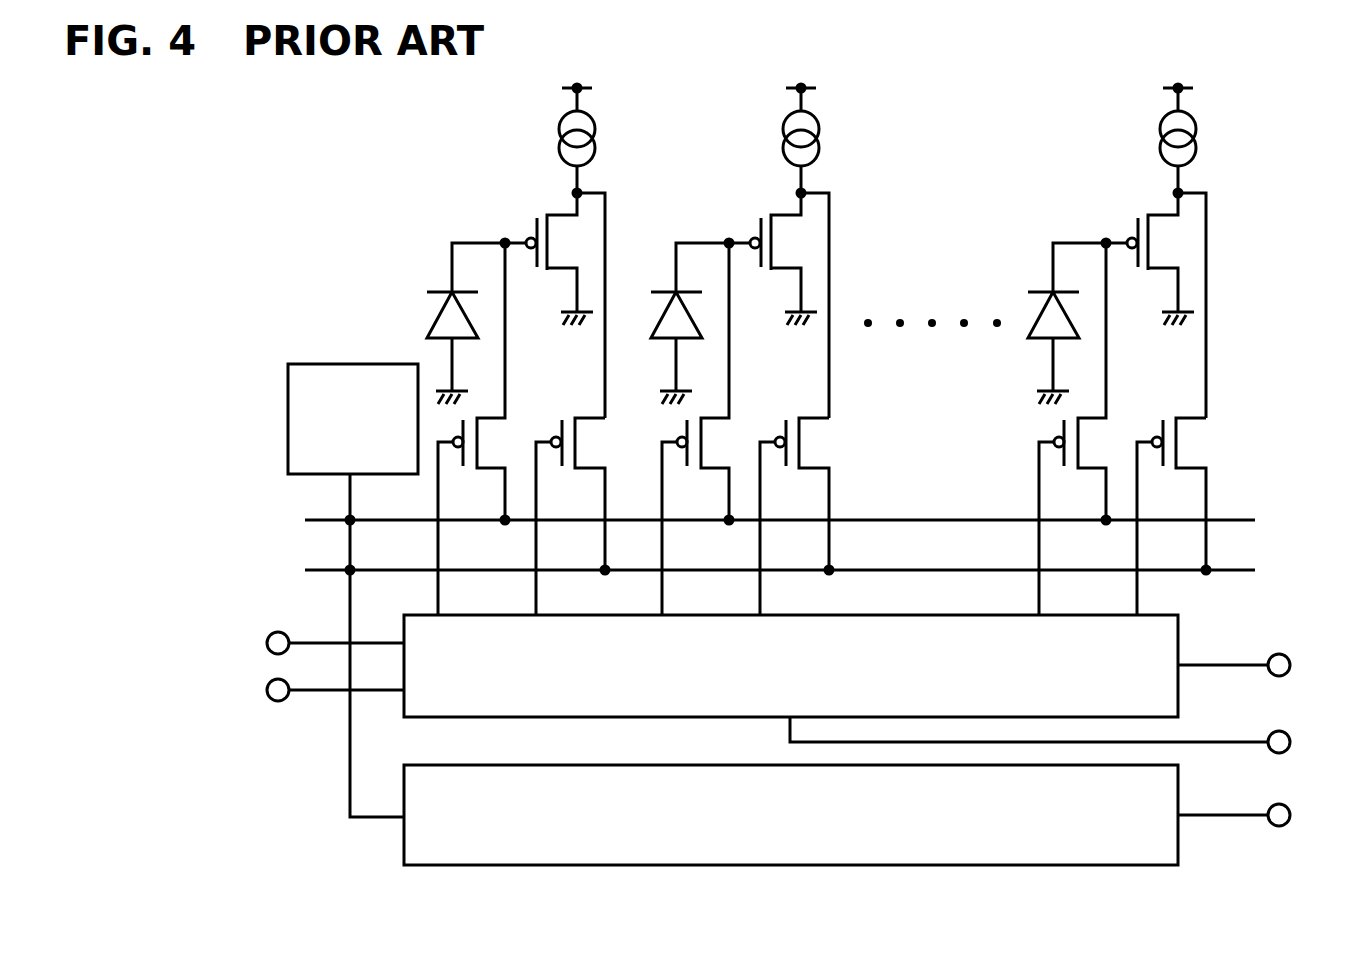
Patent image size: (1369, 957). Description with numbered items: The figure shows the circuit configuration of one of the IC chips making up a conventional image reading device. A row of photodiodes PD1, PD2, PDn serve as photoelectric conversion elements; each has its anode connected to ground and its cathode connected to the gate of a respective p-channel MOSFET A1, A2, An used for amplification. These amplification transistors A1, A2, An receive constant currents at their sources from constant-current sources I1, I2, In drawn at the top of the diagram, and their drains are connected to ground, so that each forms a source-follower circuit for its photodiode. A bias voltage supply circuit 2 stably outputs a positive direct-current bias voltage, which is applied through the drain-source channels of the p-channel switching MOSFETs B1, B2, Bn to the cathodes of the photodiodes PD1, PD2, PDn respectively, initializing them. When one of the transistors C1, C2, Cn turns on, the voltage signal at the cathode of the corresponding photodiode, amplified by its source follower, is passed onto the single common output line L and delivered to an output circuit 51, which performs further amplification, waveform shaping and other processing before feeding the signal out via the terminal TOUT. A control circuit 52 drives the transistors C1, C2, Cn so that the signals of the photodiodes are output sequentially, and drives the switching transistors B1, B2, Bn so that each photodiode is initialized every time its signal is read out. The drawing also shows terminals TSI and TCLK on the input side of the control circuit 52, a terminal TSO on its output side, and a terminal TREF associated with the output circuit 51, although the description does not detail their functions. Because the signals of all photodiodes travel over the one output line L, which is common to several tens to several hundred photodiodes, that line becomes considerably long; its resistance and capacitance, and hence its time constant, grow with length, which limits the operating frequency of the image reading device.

The bias voltage supply circuit 2 is at (333, 363).
The output circuit 51 is at (1168, 846).
The control circuit 52 is at (1168, 645).
The output line L is at (1246, 569).
The constant-current source I1 is at (599, 131).
The constant-current source I2 is at (823, 131).
The constant-current source In is at (1200, 131).
The p-channel MOSFET for amplification A1 is at (560, 244).
The p-channel MOSFET for amplification A2 is at (784, 244).
The p-channel MOSFET for amplification An is at (1161, 244).
The photodiode PD1 is at (436, 318).
The photodiode PD2 is at (660, 322).
The photodiode PDn is at (1022, 310).
The p-channel MOSFET for switching B1 is at (497, 448).
The p-channel MOSFET for switching B2 is at (721, 448).
The p-channel MOSFET for switching Bn is at (1098, 448).
The transistor C1 is at (583, 438).
The transistor C2 is at (807, 438).
The transistor Cn is at (1184, 438).
The serial input terminal TSI is at (268, 636).
The clock terminal TCLK is at (263, 701).
The serial output terminal TSO is at (1287, 655).
The reference terminal TREF is at (1290, 735).
The terminal TOUT is at (1290, 807).